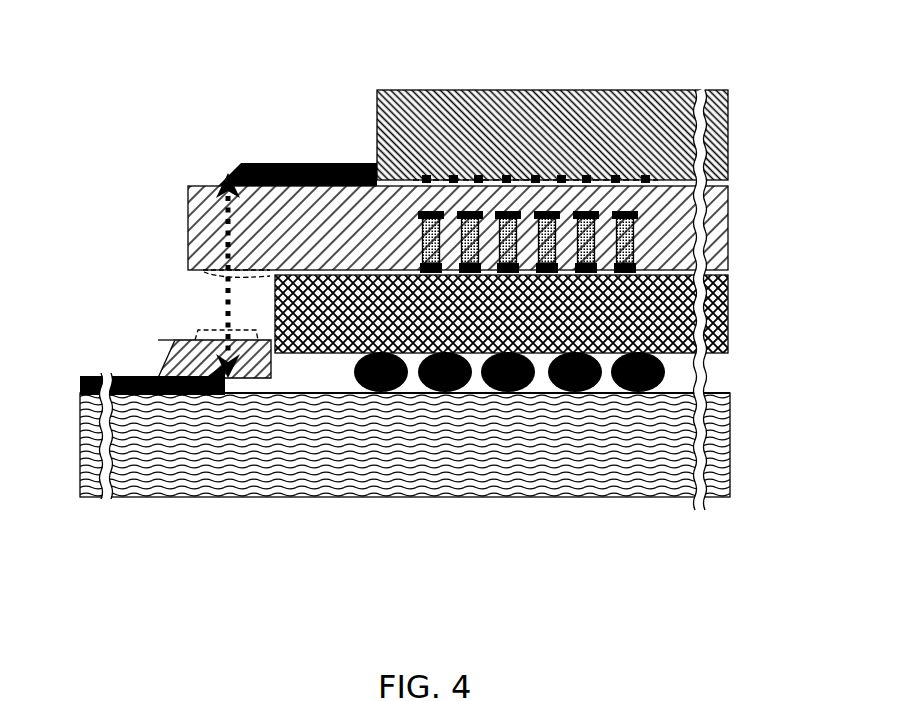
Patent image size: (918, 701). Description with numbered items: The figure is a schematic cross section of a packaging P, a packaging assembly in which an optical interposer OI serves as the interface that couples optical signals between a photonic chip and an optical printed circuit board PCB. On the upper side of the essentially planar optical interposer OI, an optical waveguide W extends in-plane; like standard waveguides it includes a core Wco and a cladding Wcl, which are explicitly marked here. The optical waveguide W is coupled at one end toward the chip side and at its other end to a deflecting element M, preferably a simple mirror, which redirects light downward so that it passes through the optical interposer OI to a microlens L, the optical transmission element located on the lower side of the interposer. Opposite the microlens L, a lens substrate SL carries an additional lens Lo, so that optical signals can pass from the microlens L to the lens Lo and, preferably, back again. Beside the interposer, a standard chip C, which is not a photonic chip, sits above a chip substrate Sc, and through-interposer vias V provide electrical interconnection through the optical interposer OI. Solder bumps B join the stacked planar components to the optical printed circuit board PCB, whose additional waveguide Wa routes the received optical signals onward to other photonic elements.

The standard chip C is at (673, 117).
The optical waveguide W is at (273, 152).
The core Wco is at (243, 157).
The cladding Wcl is at (327, 148).
The deflecting element M is at (213, 170).
The optical interposer OI is at (185, 223).
The through-interposer vias V is at (627, 212).
The microlens L is at (193, 267).
The opposite lens Lo is at (227, 320).
The lens substrate SL is at (177, 335).
The chip substrate Sc is at (680, 308).
The additional waveguide Wa is at (133, 367).
The solder bumps B is at (657, 363).
The optical printed circuit board PCB is at (453, 477).
The packaging P is at (675, 556).